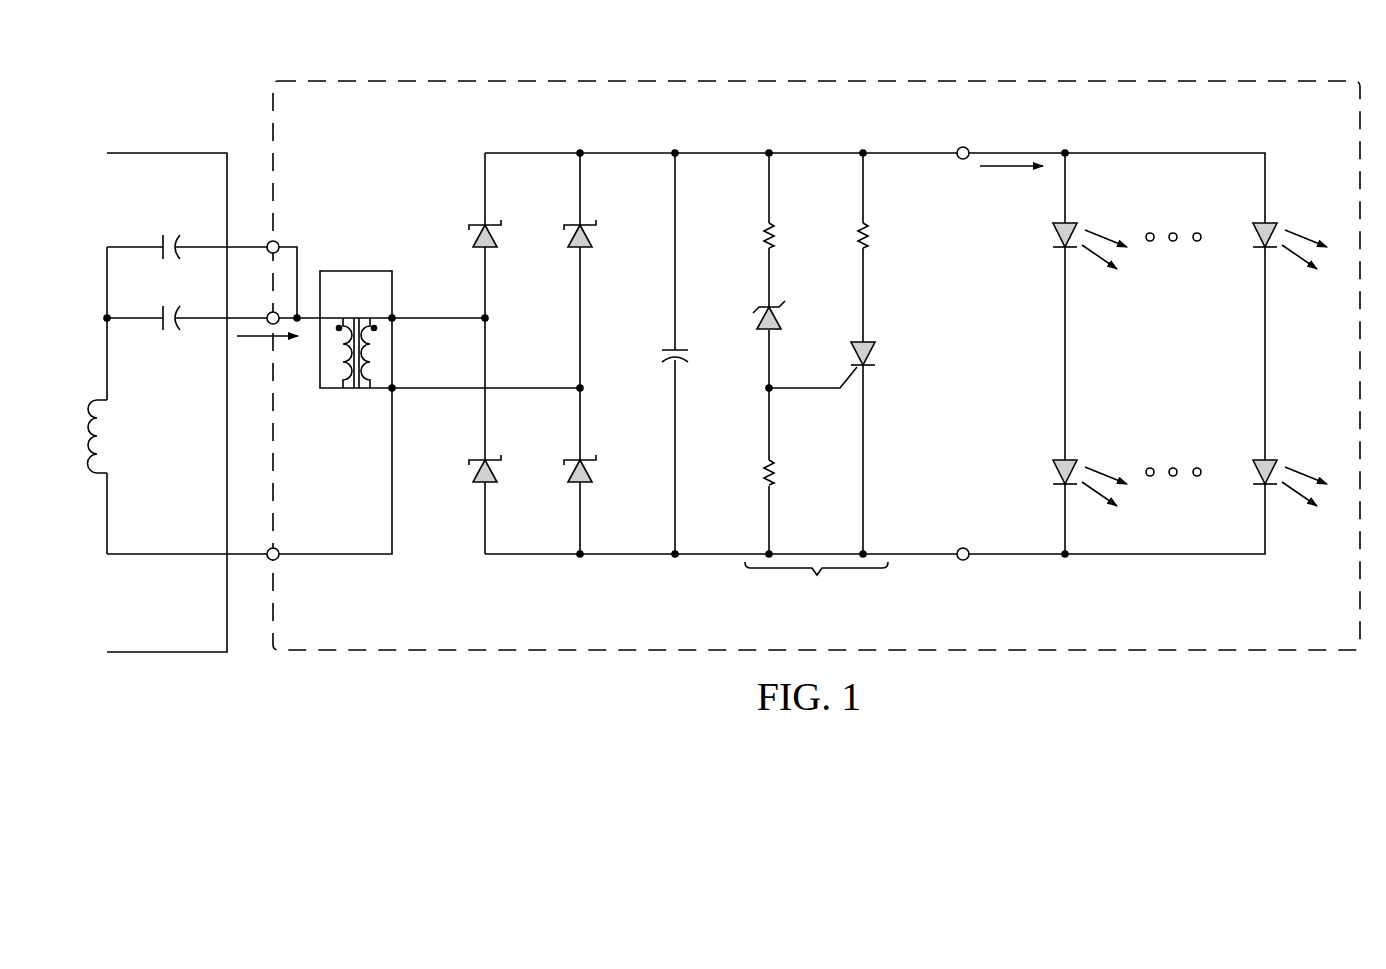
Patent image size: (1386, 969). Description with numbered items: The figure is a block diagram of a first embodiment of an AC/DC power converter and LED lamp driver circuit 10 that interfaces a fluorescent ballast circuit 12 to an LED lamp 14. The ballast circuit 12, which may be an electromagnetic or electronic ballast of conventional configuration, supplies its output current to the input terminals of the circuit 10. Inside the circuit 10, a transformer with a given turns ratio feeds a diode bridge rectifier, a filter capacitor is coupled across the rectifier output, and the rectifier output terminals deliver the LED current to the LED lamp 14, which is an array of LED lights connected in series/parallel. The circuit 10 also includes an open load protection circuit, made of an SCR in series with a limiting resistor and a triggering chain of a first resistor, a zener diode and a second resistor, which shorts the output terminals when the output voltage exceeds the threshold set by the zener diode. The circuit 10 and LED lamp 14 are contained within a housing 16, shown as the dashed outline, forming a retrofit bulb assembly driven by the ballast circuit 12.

The AC/DC power converter and LED lamp driver circuit 10 is at (957, 141).
The fluorescent ballast circuit 12 is at (180, 471).
The LED lamp 14 is at (1048, 139).
The housing 16 is at (818, 80).